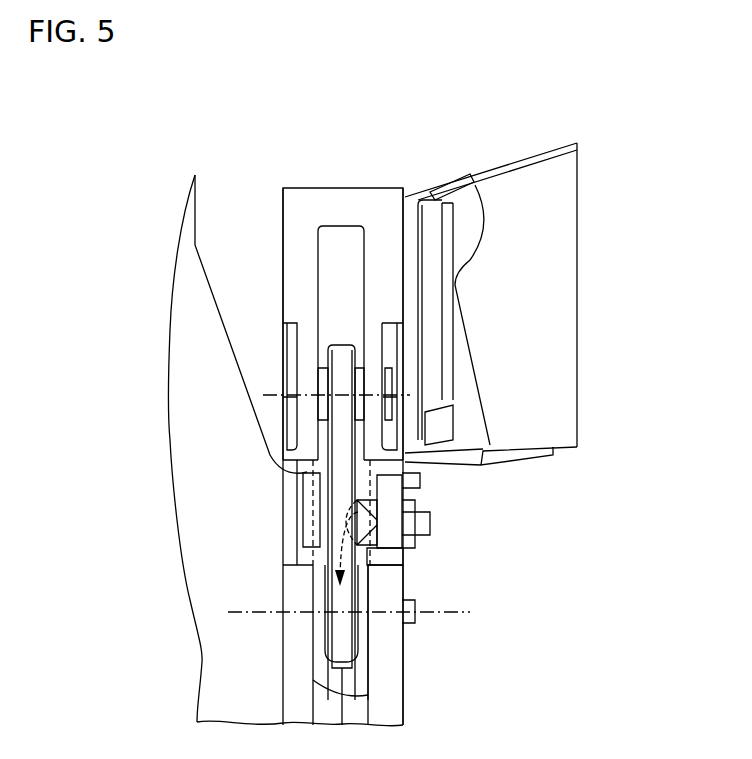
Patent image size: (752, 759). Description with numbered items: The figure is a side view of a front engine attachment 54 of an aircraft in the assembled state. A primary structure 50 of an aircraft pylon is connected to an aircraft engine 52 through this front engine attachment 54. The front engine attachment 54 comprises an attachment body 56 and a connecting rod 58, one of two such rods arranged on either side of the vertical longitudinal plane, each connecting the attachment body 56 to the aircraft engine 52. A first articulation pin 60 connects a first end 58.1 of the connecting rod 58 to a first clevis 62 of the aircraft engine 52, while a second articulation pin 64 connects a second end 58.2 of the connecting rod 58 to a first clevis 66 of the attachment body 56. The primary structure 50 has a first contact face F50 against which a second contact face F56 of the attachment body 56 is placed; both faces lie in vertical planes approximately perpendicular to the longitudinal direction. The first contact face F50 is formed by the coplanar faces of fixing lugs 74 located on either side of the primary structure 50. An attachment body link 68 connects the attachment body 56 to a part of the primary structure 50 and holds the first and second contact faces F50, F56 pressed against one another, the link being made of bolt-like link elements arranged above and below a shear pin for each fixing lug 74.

The primary structure 50 is at (540, 170).
The aircraft engine 52 is at (230, 657).
The front engine attachment 54 is at (333, 175).
The attachment body 56 is at (302, 196).
The connecting rod 58 is at (338, 475).
The first end of the connecting rod 58.1 is at (360, 528).
The second end of the connecting rod 58.2 is at (395, 272).
The first articulation pin 60 is at (418, 610).
The first clevis of the aircraft engine 62 is at (403, 700).
The second articulation pin 64 is at (290, 397).
The first clevis of the attachment body 66 is at (283, 347).
The attachment body link 68 is at (378, 188).
The fixing lug 74 is at (422, 340).
The first contact face F50 is at (335, 338).
The second contact face F56 is at (407, 237).